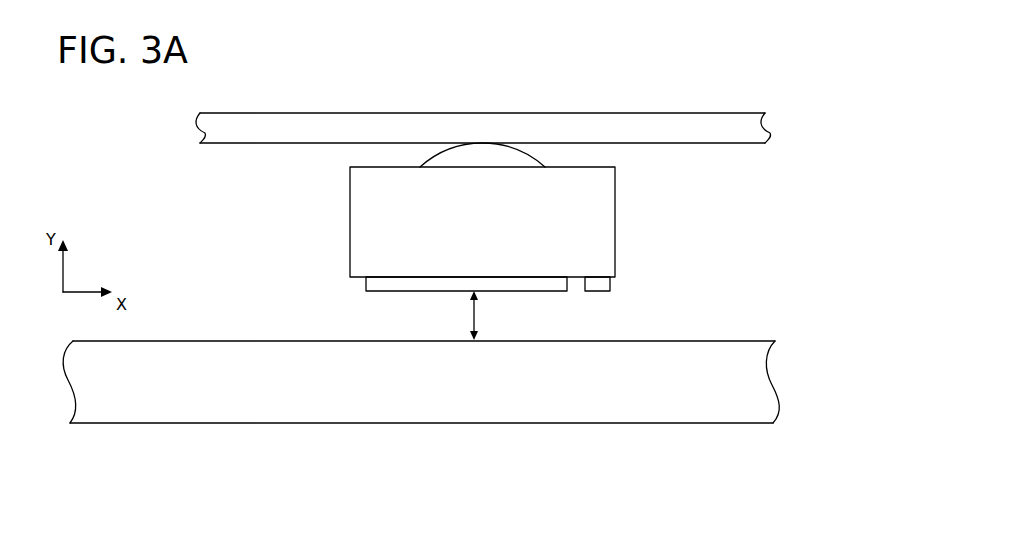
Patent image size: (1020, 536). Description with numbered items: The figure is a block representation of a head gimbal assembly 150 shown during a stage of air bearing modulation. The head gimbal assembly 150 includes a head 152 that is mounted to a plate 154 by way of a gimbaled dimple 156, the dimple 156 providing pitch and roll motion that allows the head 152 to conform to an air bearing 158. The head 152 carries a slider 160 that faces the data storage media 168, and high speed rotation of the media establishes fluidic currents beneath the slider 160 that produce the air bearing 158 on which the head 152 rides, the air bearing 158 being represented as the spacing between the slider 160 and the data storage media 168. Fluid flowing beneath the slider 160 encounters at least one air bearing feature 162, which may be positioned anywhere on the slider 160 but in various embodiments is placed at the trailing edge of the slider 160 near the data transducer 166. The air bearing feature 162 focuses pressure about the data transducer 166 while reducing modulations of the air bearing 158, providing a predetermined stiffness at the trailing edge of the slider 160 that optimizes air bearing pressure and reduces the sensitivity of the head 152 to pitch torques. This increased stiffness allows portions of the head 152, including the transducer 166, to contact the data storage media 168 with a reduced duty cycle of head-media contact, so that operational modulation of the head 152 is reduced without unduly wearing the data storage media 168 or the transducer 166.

The head gimbal assembly 150 is at (729, 57).
The head 152 is at (303, 189).
The plate 154 is at (198, 125).
The gimbaled dimple 156 is at (520, 152).
The air bearing 158 is at (491, 315).
The slider 160 is at (614, 175).
The air bearing feature 162 is at (365, 288).
The data transducer 166 is at (610, 291).
The data storage media 168 is at (421, 382).